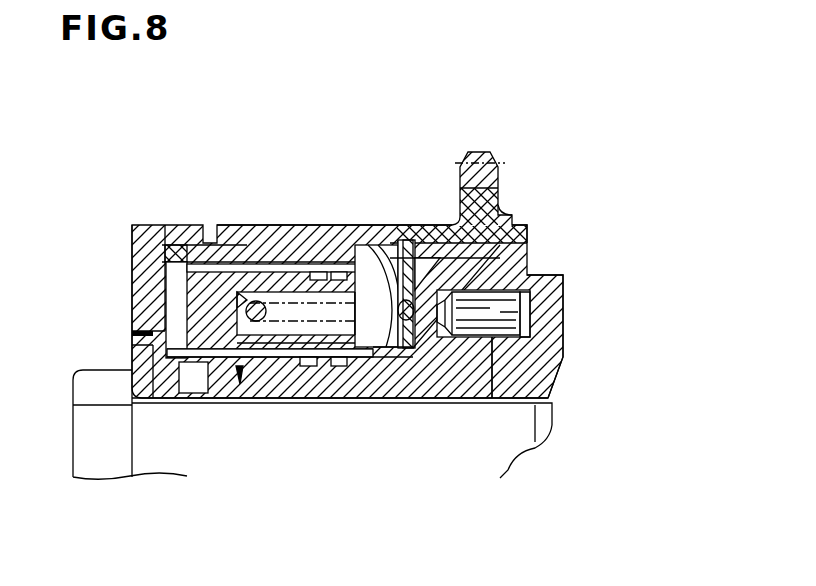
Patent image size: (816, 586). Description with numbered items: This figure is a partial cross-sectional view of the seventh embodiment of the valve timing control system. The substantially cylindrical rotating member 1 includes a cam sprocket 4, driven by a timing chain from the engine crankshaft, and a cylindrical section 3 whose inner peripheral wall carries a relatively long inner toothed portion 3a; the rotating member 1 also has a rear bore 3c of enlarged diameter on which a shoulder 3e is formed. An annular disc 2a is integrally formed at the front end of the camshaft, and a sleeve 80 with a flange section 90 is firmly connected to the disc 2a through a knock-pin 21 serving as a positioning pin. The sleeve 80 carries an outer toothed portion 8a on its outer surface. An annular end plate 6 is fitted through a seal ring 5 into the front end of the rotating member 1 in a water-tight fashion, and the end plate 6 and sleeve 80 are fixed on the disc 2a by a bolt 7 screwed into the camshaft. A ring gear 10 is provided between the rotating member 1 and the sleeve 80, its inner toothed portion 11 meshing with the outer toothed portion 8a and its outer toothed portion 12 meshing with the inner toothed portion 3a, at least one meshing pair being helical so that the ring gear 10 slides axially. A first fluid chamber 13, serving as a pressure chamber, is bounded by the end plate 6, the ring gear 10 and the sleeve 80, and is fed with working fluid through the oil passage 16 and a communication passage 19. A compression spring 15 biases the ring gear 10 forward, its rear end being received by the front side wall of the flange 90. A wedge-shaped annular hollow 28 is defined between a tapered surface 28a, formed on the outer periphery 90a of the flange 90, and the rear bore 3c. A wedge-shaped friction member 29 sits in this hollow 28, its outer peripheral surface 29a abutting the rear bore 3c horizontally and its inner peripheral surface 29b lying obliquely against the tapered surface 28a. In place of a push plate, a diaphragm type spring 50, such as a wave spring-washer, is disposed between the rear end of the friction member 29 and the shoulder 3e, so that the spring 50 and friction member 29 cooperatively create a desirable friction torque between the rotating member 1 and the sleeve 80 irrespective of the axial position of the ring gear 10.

The rotating member 1 is at (289, 205).
The annular disc 2a is at (565, 293).
The cylindrical section 3 is at (272, 224).
The inner toothed portion 3a is at (248, 277).
The rear bore 3c is at (413, 224).
The shoulder 3e is at (372, 224).
The cam sprocket 4 is at (490, 152).
The seal ring 5 is at (177, 257).
The annular end plate 6 is at (143, 243).
The bolt 7 is at (100, 382).
The outer toothed portion 8a is at (273, 350).
The ring gear 10 is at (240, 386).
The inner toothed portion 11 is at (223, 360).
The outer toothed portion 12 is at (217, 262).
The first fluid chamber 13 is at (175, 292).
The compression spring 15 is at (395, 336).
The oil passage 16 is at (433, 397).
The communication passage 19 is at (192, 387).
The knock-pin 21 is at (503, 312).
The annular hollow 28 is at (512, 232).
The tapered surface 28a is at (503, 212).
The friction member 29 is at (437, 224).
The outer peripheral surface 29a is at (447, 224).
The inner peripheral surface 29b is at (455, 252).
The diaphragm type spring 50 is at (360, 224).
The sleeve 80 is at (347, 385).
The flange section 90 is at (472, 373).
The outer periphery 90a is at (528, 240).